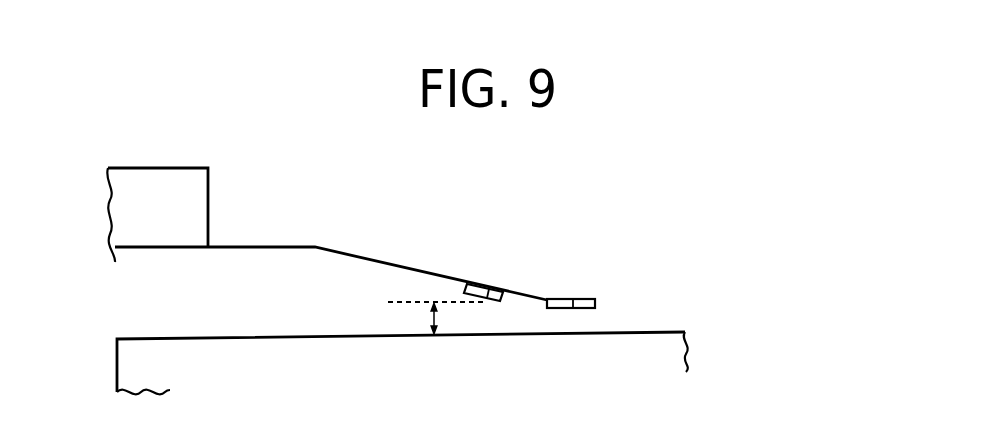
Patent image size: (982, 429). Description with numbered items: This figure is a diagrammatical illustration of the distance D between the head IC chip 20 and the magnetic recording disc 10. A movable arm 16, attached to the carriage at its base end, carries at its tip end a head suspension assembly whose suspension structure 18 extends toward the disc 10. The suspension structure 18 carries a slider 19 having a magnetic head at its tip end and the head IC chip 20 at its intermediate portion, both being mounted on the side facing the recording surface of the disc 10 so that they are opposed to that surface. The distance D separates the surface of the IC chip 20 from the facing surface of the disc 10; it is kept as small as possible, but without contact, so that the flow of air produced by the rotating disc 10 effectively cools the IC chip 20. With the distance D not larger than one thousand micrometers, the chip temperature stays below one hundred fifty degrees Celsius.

The magnetic recording disc 10 is at (638, 338).
The movable arm 16 is at (202, 200).
The suspension structure 18 is at (368, 258).
The slider 19 is at (571, 298).
The head IC chip 20 is at (492, 287).
The distance D is at (452, 317).